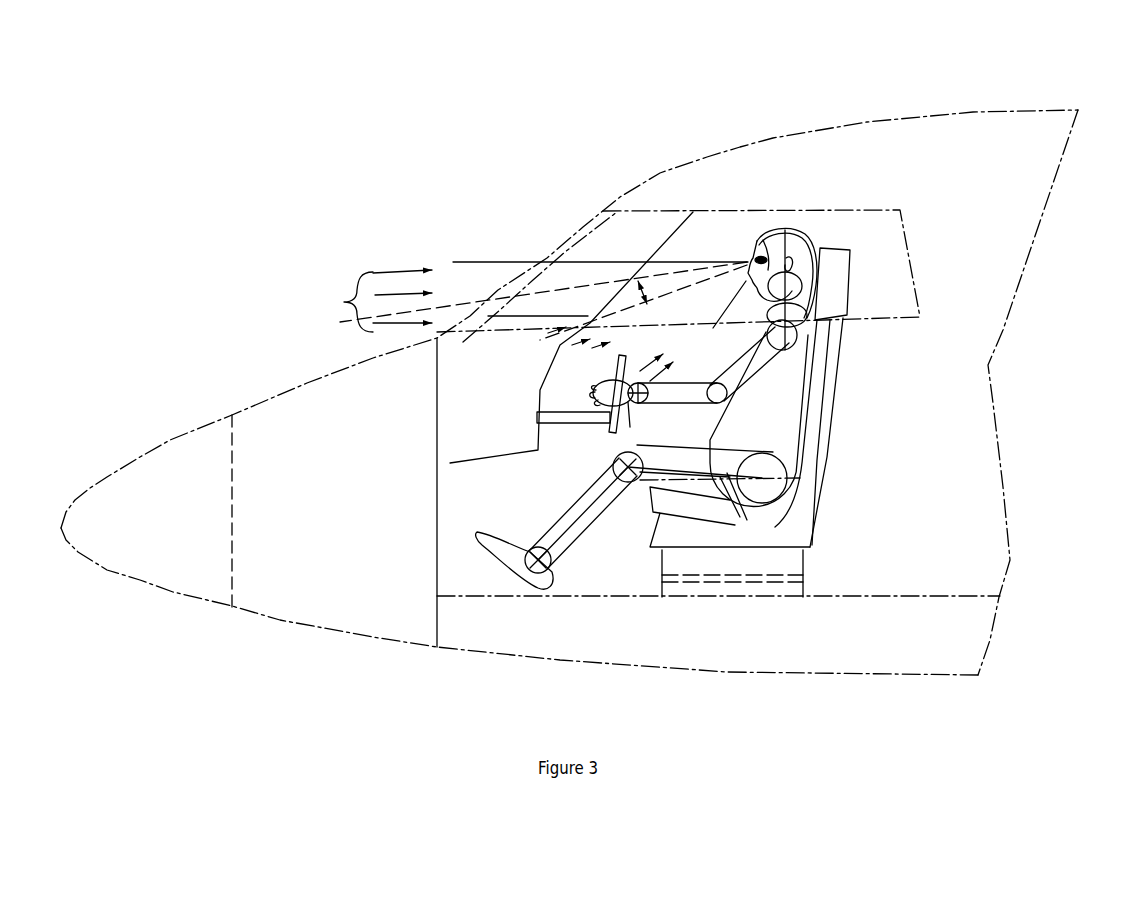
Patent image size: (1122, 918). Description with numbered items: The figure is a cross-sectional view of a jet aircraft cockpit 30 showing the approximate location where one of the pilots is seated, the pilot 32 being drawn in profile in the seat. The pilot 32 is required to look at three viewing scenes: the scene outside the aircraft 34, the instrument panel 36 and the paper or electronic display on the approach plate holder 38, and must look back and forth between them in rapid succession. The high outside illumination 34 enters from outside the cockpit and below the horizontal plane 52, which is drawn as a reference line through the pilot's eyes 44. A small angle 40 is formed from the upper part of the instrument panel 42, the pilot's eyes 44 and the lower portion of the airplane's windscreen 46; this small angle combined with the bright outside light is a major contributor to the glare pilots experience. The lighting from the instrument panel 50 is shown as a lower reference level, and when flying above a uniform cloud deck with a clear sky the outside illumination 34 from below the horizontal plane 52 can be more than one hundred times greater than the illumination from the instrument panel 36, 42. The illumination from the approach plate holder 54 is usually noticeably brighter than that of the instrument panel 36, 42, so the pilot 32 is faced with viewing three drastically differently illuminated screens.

The jet aircraft cockpit 30 is at (862, 122).
The pilot 32 is at (800, 224).
The outside illumination 34 is at (375, 301).
The instrument panel 36 is at (549, 367).
The approach plate holder 38 is at (636, 415).
The small angle 40 is at (630, 295).
The upper part of the instrument panel 42 is at (575, 328).
The pilot's eyes 44 is at (749, 258).
The lower portion of the airplane's windscreen 46 is at (518, 295).
The lighting from the instrument panel 50 is at (678, 313).
The horizontal plane 52 is at (481, 262).
The illumination from the approach plate holder 54 is at (623, 354).